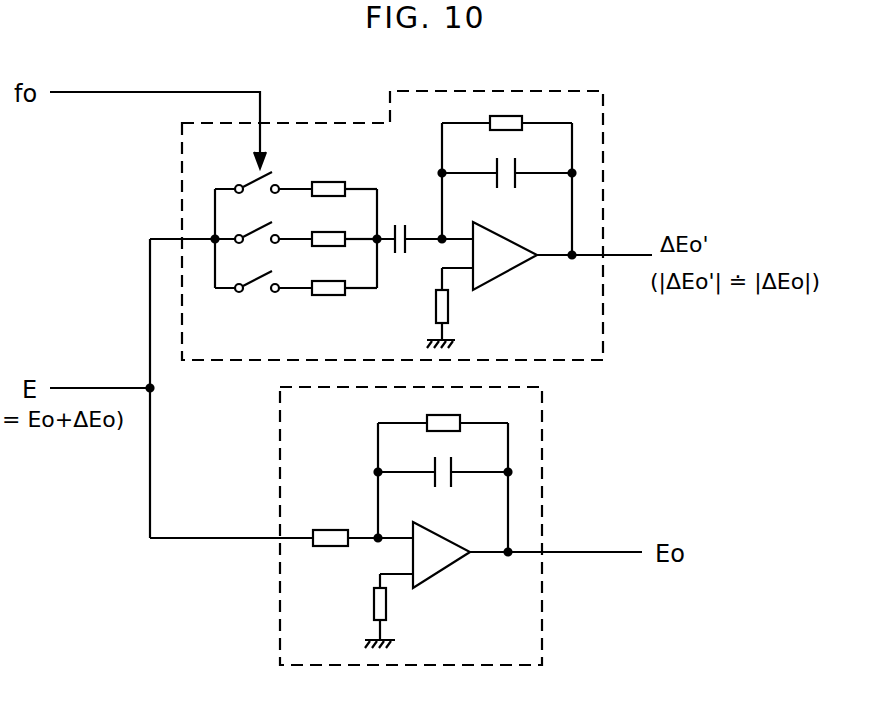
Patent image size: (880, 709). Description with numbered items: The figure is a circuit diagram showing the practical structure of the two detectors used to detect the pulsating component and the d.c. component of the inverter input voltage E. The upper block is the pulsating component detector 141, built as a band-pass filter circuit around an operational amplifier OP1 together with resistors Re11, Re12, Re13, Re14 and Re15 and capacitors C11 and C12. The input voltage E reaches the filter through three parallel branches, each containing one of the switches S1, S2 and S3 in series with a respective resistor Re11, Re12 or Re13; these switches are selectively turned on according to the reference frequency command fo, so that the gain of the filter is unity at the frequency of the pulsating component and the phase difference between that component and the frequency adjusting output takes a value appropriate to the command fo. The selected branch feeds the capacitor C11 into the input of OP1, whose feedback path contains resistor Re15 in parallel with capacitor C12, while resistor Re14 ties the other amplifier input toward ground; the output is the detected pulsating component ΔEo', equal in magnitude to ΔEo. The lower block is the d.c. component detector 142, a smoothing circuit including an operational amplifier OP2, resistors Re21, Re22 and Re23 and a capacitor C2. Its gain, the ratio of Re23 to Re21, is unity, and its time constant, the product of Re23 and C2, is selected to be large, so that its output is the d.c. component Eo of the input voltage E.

The pulsating component detector 141 is at (603, 93).
The d.c. component detector 142 is at (542, 430).
The switch S1 is at (242, 183).
The switch S2 is at (262, 228).
The switch S3 is at (251, 294).
The resistor Re11 is at (330, 182).
The resistor Re12 is at (340, 232).
The resistor Re13 is at (330, 296).
The resistor Re14 is at (449, 302).
The resistor Re15 is at (492, 117).
The capacitor C11 is at (406, 254).
The capacitor C12 is at (514, 189).
The operational amplifier OP1 is at (520, 268).
The resistor Re21 is at (330, 530).
The resistor Re22 is at (374, 604).
The resistor Re23 is at (430, 417).
The capacitor C2 is at (450, 488).
The operational amplifier OP2 is at (440, 588).